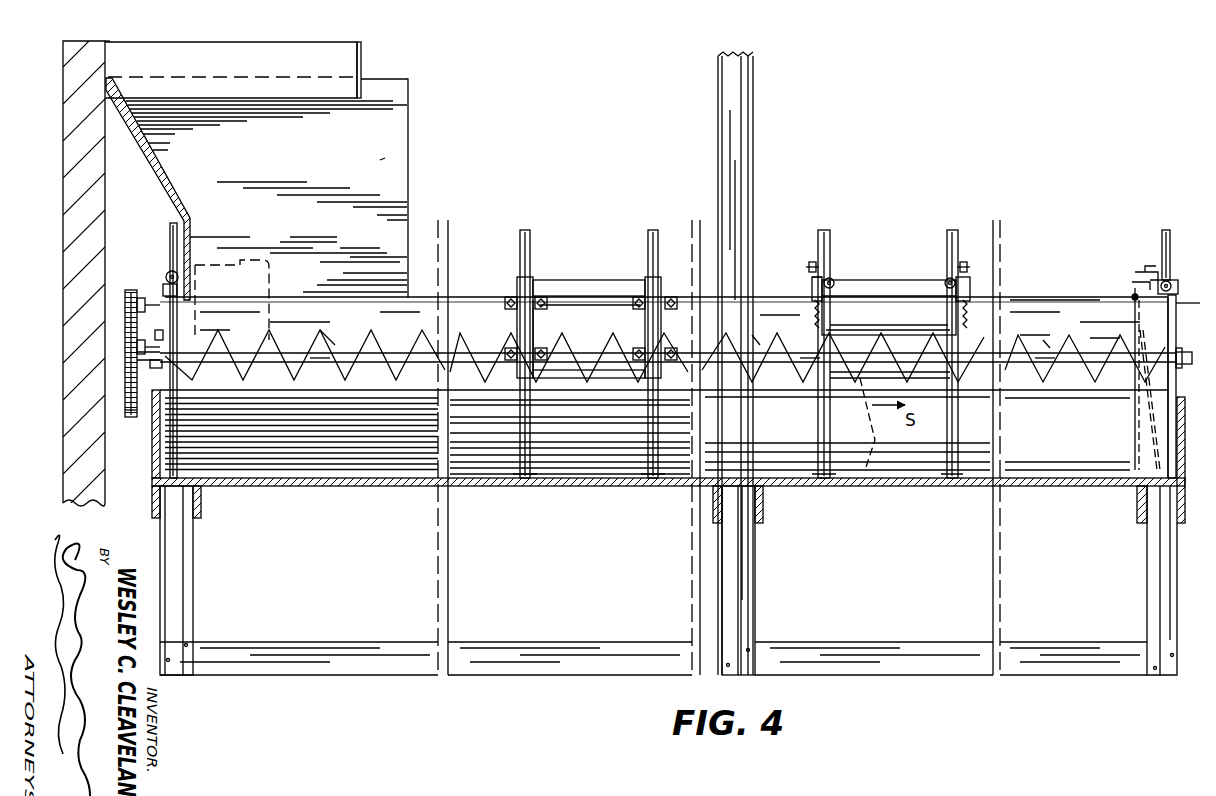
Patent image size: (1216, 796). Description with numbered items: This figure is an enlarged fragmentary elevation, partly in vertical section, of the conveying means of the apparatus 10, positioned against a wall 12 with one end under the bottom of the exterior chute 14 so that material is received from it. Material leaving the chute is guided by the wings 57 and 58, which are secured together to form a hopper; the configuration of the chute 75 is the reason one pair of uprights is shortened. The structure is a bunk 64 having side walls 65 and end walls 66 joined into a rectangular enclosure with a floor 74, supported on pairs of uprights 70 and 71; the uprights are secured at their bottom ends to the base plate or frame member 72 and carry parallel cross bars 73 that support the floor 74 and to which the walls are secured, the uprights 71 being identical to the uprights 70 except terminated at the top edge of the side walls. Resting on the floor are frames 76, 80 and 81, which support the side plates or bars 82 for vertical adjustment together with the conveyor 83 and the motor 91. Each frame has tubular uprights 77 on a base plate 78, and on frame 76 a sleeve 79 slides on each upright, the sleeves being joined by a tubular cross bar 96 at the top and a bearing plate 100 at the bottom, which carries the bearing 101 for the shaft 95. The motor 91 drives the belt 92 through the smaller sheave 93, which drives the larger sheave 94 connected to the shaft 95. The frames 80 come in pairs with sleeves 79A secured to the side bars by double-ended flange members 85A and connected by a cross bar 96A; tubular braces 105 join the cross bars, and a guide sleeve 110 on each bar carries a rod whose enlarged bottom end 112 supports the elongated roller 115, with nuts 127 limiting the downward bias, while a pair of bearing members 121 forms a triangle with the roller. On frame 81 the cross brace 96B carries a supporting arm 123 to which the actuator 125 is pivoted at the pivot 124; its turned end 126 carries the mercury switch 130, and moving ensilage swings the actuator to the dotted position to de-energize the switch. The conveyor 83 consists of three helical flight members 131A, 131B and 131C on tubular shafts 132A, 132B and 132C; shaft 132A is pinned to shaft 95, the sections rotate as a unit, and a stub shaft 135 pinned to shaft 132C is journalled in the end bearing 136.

The material handling apparatus 10 is at (118, 58).
The wall 12 is at (70, 72).
The exterior chute 14 is at (365, 50).
The wing 57 is at (150, 168).
The wing 58 is at (393, 172).
The bunk 64 is at (1030, 490).
The side wall 65 is at (1031, 441).
The end wall 66 is at (152, 458).
The upright 70 is at (750, 73).
The upright 71 is at (186, 608).
The base plate or frame member 72 is at (880, 640).
The cross bar 73 is at (713, 505).
The floor 74 is at (196, 396).
The chute 75 is at (385, 160).
The frame 76 is at (168, 235).
The upright 77 is at (528, 233).
The base plate 78 is at (532, 487).
The sleeve 79 is at (164, 288).
The sleeve 79A is at (536, 275).
The frame 80 is at (515, 280).
The frame 81 is at (1178, 302).
The side plate or bar 82 is at (610, 310).
The conveyor 83 is at (372, 330).
The double-ended flange member 85A is at (506, 298).
The motor 91 is at (262, 262).
The belt 92 is at (122, 357).
The sheave 93 is at (128, 296).
The sheave 94 is at (124, 410).
The shaft 95 is at (138, 345).
The cross bar 96 is at (168, 272).
The cross bar 96A is at (834, 280).
The cross brace 96B is at (1172, 284).
The bearing plate 100 is at (158, 368).
The bearing 101 is at (159, 332).
The tubular brace 105 is at (597, 282).
The sleeve 110 is at (812, 286).
The bottom end 112 is at (812, 318).
The elongated roller 115 is at (914, 328).
The bearing member 121 is at (600, 382).
The supporting arm 123 is at (1190, 305).
The pivot 124 is at (1135, 297).
The actuator 125 is at (1136, 440).
The turned end 126 is at (1135, 280).
The nut 127 is at (808, 267).
The mercury switch 130 is at (1148, 268).
The helical flight member 131A is at (330, 340).
The helical flight member 131B is at (757, 348).
The helical flight member 131C is at (1050, 345).
The tubular supporting shaft 132A is at (325, 362).
The tubular supporting shaft 132B is at (812, 380).
The tubular supporting shaft 132C is at (1045, 382).
The stub shaft 135 is at (1190, 352).
The end bearing 136 is at (1181, 368).